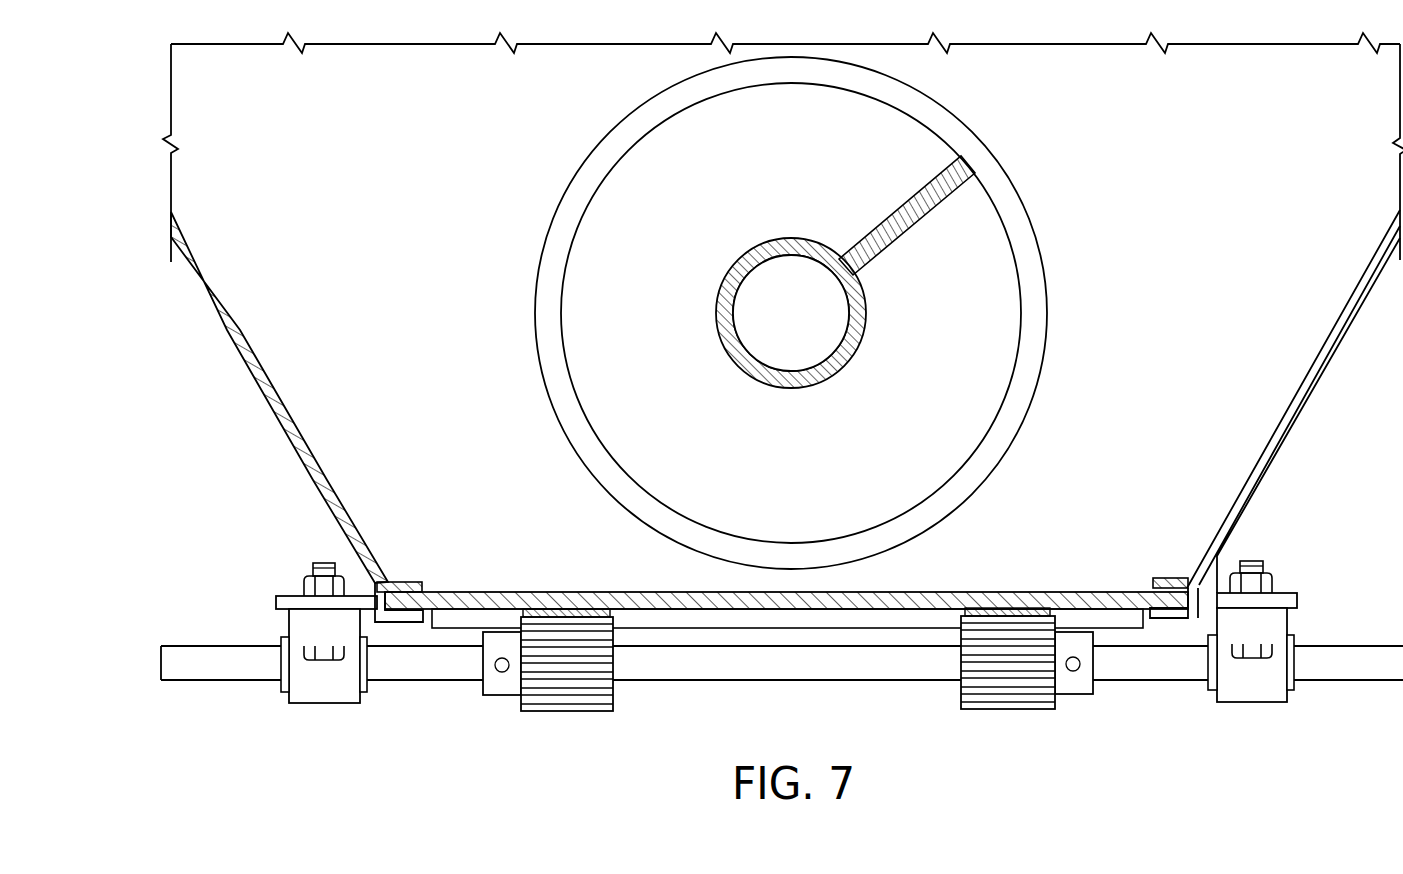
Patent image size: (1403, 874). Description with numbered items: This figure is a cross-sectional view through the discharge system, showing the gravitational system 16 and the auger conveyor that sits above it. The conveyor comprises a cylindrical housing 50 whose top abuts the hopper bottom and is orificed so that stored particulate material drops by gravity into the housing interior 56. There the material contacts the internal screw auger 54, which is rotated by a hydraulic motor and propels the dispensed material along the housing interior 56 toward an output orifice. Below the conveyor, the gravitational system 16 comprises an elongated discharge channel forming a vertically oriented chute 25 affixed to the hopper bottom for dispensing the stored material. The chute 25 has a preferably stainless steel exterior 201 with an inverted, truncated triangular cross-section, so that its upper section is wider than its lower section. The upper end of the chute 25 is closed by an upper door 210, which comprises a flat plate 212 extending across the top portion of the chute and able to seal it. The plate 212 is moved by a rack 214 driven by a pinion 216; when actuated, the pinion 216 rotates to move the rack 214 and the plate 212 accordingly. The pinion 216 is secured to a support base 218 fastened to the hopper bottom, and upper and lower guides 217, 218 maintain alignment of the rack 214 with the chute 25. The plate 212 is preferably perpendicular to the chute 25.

The gravitational system 16 is at (203, 494).
The chute 25 is at (730, 693).
The cylindrical housing 50 is at (1037, 248).
The screw auger 54 is at (958, 174).
The housing interior 56 is at (1008, 318).
The exterior 201 is at (205, 297).
The upper door 210 is at (455, 568).
The flat plate 212 is at (916, 590).
The rack 214 is at (553, 609).
The pinion 216 is at (555, 697).
The upper guide 217 is at (1163, 578).
The lower guide 218 is at (1133, 590).